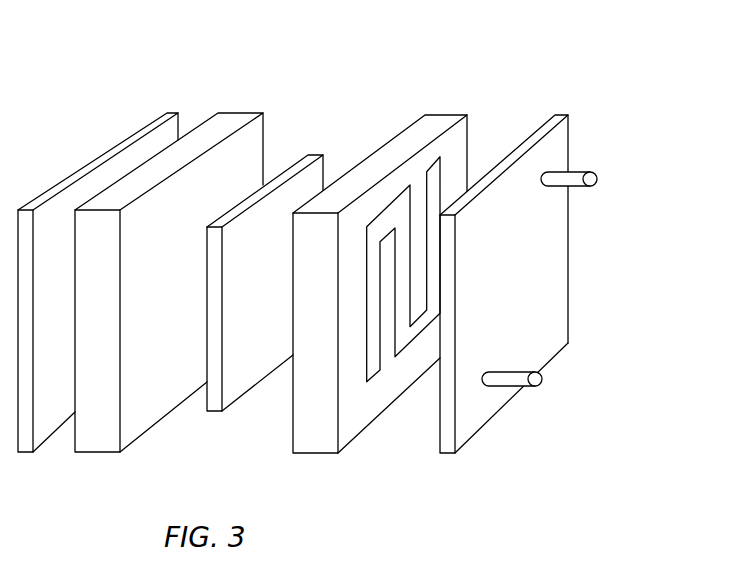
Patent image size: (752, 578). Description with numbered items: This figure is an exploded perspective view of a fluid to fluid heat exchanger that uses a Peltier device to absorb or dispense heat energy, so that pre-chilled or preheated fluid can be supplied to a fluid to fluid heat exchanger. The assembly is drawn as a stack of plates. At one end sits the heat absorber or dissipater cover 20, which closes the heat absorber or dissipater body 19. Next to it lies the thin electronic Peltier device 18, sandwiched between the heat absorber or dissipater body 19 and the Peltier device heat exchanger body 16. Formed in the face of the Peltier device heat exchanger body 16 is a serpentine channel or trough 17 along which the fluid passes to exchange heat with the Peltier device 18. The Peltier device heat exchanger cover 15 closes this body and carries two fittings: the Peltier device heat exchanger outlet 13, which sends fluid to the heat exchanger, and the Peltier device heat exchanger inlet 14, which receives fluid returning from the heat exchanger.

The Peltier device heat exchanger outlet to heat exchanger 13 is at (602, 195).
The Peltier device heat exchanger inlet from heat exchanger 14 is at (542, 385).
The Peltier device heat exchanger cover 15 is at (540, 300).
The Peltier device heat exchanger body 16 is at (453, 172).
The channel or trough of Peltier device heat exchanger 17 is at (427, 172).
The electronic Peltier device 18 is at (308, 185).
The heat absorber or dissipater body 19 is at (233, 128).
The heat absorber or dissipater cover 20 is at (122, 139).